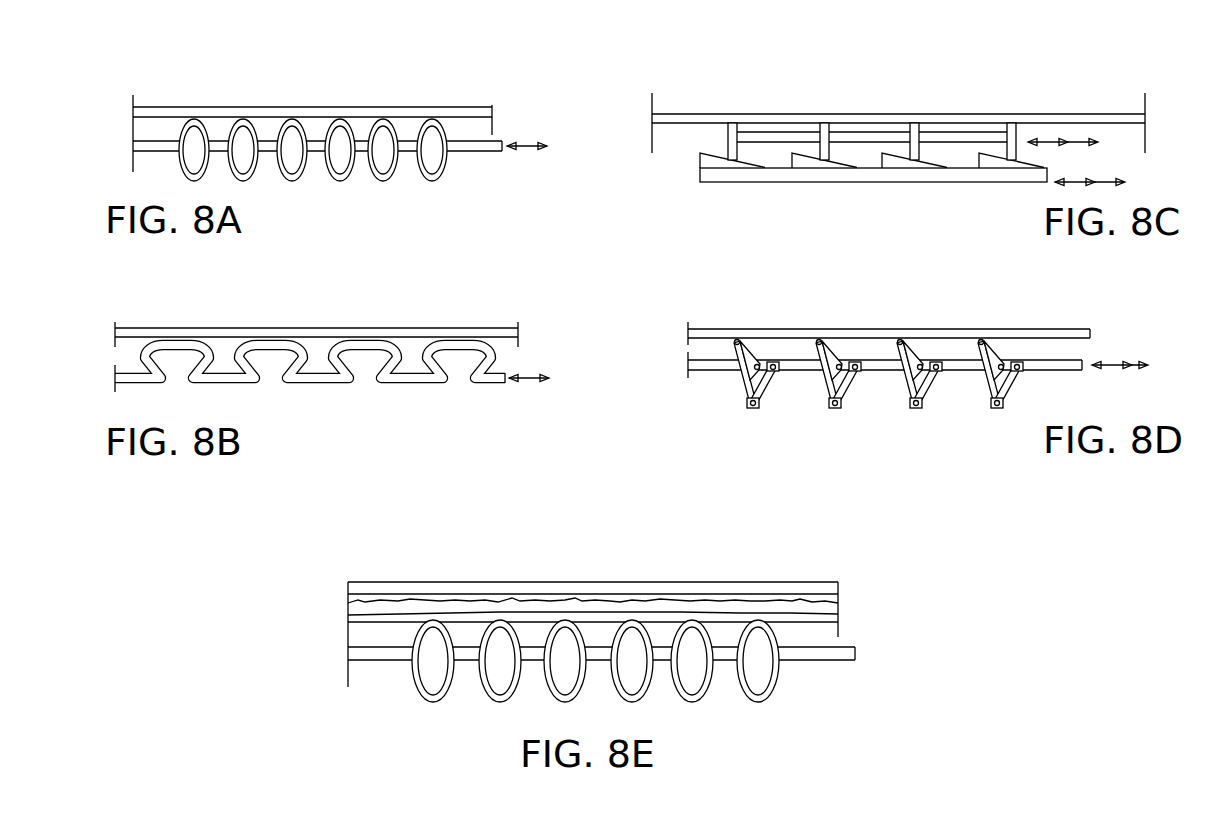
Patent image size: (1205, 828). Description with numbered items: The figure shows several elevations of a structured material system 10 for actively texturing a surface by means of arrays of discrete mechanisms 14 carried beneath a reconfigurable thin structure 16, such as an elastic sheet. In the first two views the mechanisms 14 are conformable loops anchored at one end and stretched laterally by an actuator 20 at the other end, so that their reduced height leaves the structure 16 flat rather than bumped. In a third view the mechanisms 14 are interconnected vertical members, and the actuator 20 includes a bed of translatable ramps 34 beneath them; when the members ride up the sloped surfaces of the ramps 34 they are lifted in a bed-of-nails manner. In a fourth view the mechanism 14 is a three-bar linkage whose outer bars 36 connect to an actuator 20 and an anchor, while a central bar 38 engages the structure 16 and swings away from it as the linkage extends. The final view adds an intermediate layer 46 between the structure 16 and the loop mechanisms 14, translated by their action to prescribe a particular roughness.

In FIG. 8A, the structured material system 10 is at (173, 84).
In FIG. 8E, the structured material system 10 is at (424, 567).
In FIG. 8A, the discrete mechanisms 14 is at (432, 183).
In FIG. 8B, the discrete mechanisms 14 is at (452, 384).
In FIG. 8C, the discrete mechanisms 14 is at (915, 156).
In FIG. 8D, the discrete mechanisms 14 is at (844, 402).
In FIG. 8A, the reconfigurable thin structure 16 is at (360, 106).
In FIG. 8C, the reconfigurable thin structure 16 is at (935, 118).
In FIG. 8D, the reconfigurable thin structure 16 is at (935, 333).
In FIG. 8A, the actuator 20 is at (486, 153).
In FIG. 8C, the translatable ramps 34 is at (800, 156).
In FIG. 8D, the outer bars 36 is at (934, 384).
In FIG. 8D, the central bar 38 is at (900, 378).
In FIG. 8E, the intermediate layer 46 is at (838, 605).